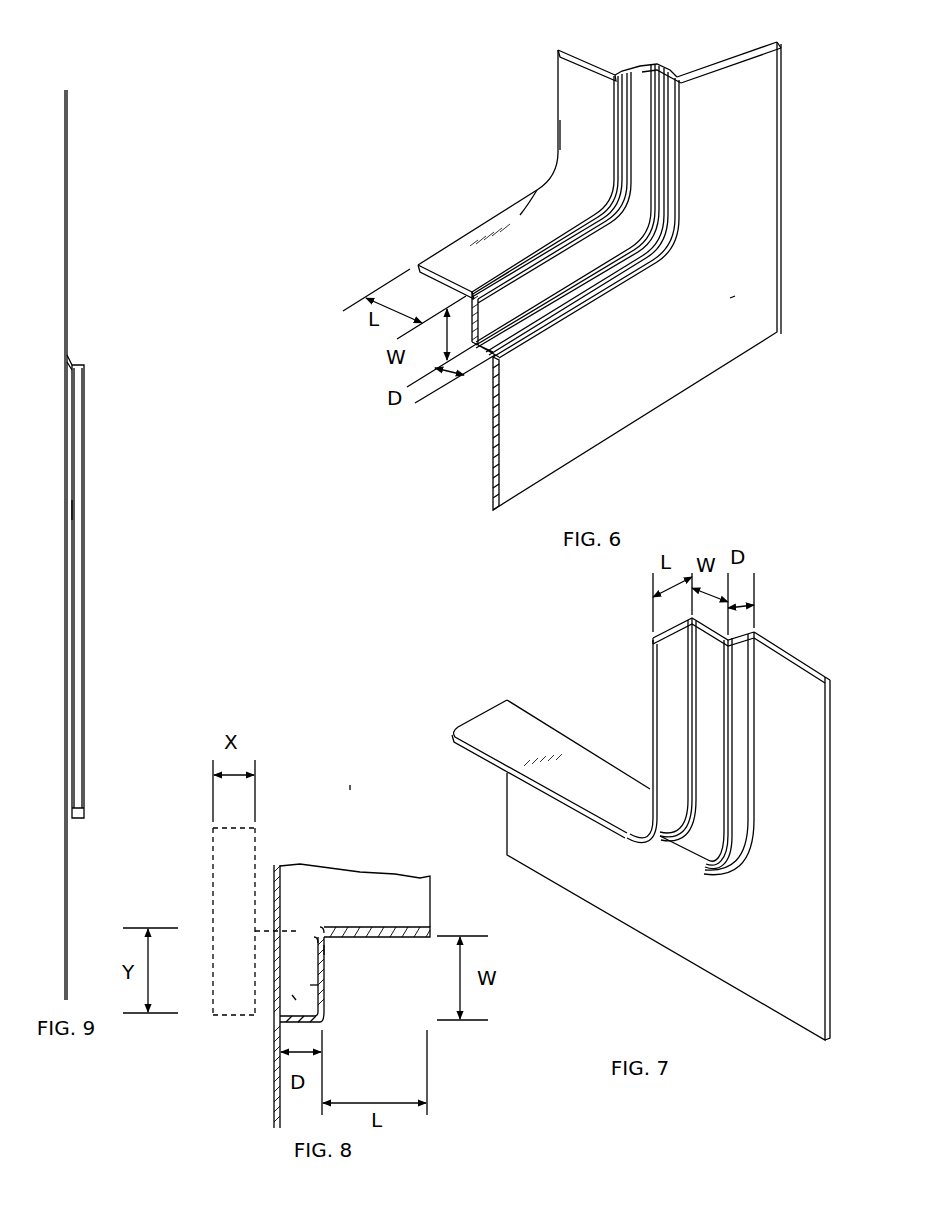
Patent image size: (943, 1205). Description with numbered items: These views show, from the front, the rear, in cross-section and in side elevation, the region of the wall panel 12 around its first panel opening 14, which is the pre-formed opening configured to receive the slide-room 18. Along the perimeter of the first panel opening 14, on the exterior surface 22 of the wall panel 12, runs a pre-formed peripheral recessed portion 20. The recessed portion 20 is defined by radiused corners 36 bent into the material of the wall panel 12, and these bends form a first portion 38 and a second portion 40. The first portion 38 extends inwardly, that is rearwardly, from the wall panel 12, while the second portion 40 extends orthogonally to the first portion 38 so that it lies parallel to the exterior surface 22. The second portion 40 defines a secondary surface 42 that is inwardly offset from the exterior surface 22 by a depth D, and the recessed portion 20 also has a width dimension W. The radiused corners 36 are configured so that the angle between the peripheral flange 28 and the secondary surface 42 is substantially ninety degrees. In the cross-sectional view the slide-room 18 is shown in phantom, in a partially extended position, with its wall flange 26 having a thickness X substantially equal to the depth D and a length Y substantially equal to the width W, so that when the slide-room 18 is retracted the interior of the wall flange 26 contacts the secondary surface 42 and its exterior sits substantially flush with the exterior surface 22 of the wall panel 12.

In FIG. 6, the wall panel 12 is at (773, 211).
In FIG. 7, the wall panel 12 is at (727, 973).
In FIG. 8, the wall panel 12 is at (272, 1090).
In FIG. 9, the wall panel 12 is at (68, 177).
In FIG. 6, the first panel opening 14 is at (440, 112).
In FIG. 7, the first panel opening 14 is at (587, 668).
In FIG. 8, the first panel opening 14 is at (350, 790).
In FIG. 9, the first panel opening 14 is at (125, 545).
In FIG. 8, the slide-room 18 is at (213, 852).
In FIG. 6, the recessed portion 20 is at (612, 240).
In FIG. 7, the recessed portion 20 is at (703, 832).
In FIG. 8, the recessed portion 20 is at (292, 998).
In FIG. 9, the recessed portion 20 is at (70, 355).
In FIG. 6, the exterior surface 22 is at (735, 296).
In FIG. 8, the wall flange 26 is at (205, 940).
In FIG. 6, the peripheral flange 28 is at (485, 232).
In FIG. 7, the peripheral flange 28 is at (512, 722).
In FIG. 8, the peripheral flange 28 is at (385, 927).
In FIG. 9, the peripheral flange 28 is at (86, 401).
In FIG. 6, the radiused corners 36 is at (620, 265).
In FIG. 7, the radiused corners 36 is at (750, 690).
In FIG. 8, the radiused corners 36 is at (272, 1022).
In FIG. 6, the first portion 38 is at (667, 70).
In FIG. 8, the first portion 38 is at (300, 1025).
In FIG. 6, the second portion 40 is at (640, 66).
In FIG. 8, the second portion 40 is at (324, 960).
In FIG. 6, the secondary surface 42 is at (568, 270).
In FIG. 8, the secondary surface 42 is at (305, 985).